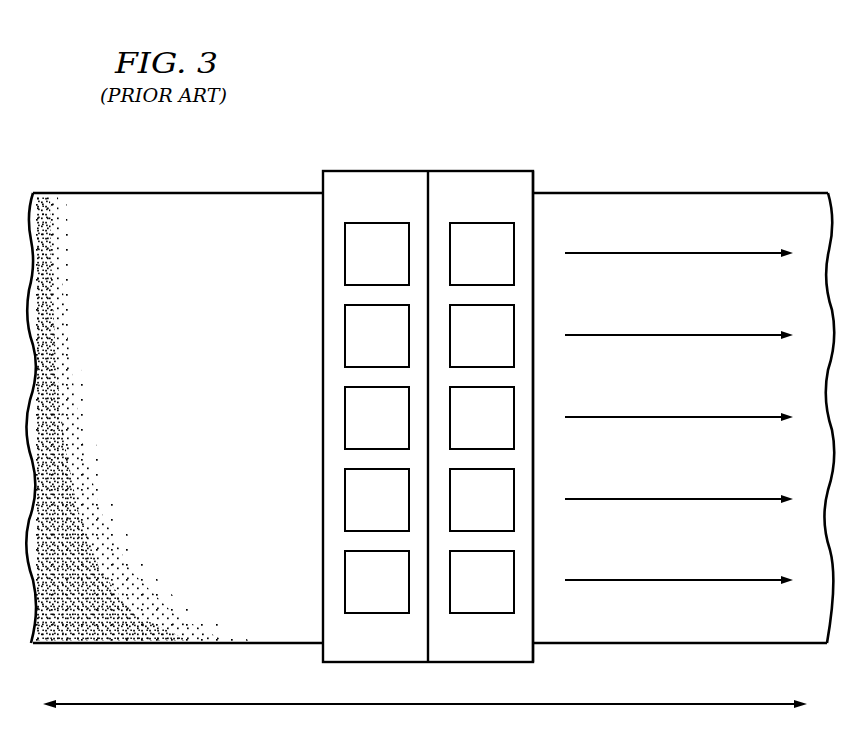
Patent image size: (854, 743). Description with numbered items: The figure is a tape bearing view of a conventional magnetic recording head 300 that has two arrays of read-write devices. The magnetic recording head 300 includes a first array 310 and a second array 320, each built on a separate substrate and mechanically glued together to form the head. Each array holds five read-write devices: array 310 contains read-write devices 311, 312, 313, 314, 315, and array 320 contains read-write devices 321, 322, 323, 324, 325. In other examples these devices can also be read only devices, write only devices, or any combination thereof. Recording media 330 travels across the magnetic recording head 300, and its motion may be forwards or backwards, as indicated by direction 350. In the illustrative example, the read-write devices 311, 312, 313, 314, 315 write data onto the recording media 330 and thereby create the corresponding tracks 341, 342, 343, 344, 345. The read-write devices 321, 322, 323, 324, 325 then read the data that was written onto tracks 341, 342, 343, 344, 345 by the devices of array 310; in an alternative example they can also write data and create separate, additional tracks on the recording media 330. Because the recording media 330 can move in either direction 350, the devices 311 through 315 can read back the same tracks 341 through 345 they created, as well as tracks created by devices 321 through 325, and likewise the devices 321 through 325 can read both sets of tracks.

The magnetic recording head 300 is at (318, 108).
The array 310 is at (323, 160).
The array 320 is at (533, 160).
The read-write device 311 is at (398, 266).
The read-write device 312 is at (398, 348).
The read-write device 313 is at (398, 430).
The read-write device 314 is at (398, 512).
The read-write device 315 is at (398, 594).
The read-write device 321 is at (503, 266).
The read-write device 322 is at (503, 348).
The read-write device 323 is at (503, 430).
The read-write device 324 is at (503, 512).
The read-write device 325 is at (503, 594).
The recording media 330 is at (170, 458).
The track 341 is at (605, 254).
The track 342 is at (747, 334).
The track 343 is at (747, 416).
The track 344 is at (747, 498).
The track 345 is at (747, 579).
The direction 350 is at (155, 703).